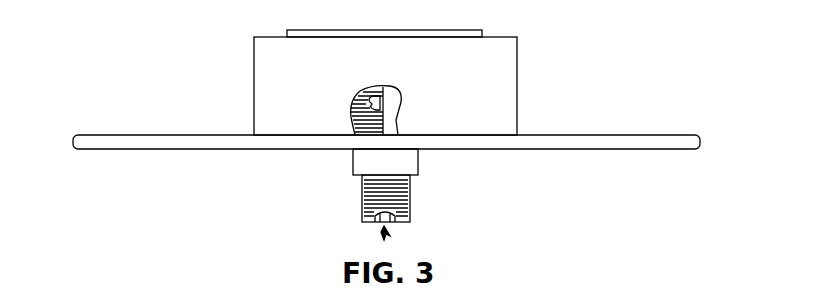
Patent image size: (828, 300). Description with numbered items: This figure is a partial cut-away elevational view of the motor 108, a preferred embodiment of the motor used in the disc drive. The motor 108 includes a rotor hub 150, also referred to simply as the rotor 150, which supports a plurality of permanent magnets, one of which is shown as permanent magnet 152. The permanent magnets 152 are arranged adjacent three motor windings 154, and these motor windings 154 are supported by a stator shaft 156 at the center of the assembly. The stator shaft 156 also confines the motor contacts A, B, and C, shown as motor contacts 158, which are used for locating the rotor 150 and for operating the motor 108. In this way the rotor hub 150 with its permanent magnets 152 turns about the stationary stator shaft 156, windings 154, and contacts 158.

The motor 108 is at (535, 29).
The rotor hub 150 is at (517, 120).
The permanent magnet 152 is at (393, 116).
The motor windings 154 is at (351, 108).
The stator shaft 156 is at (383, 106).
The motor contacts 158 is at (389, 233).